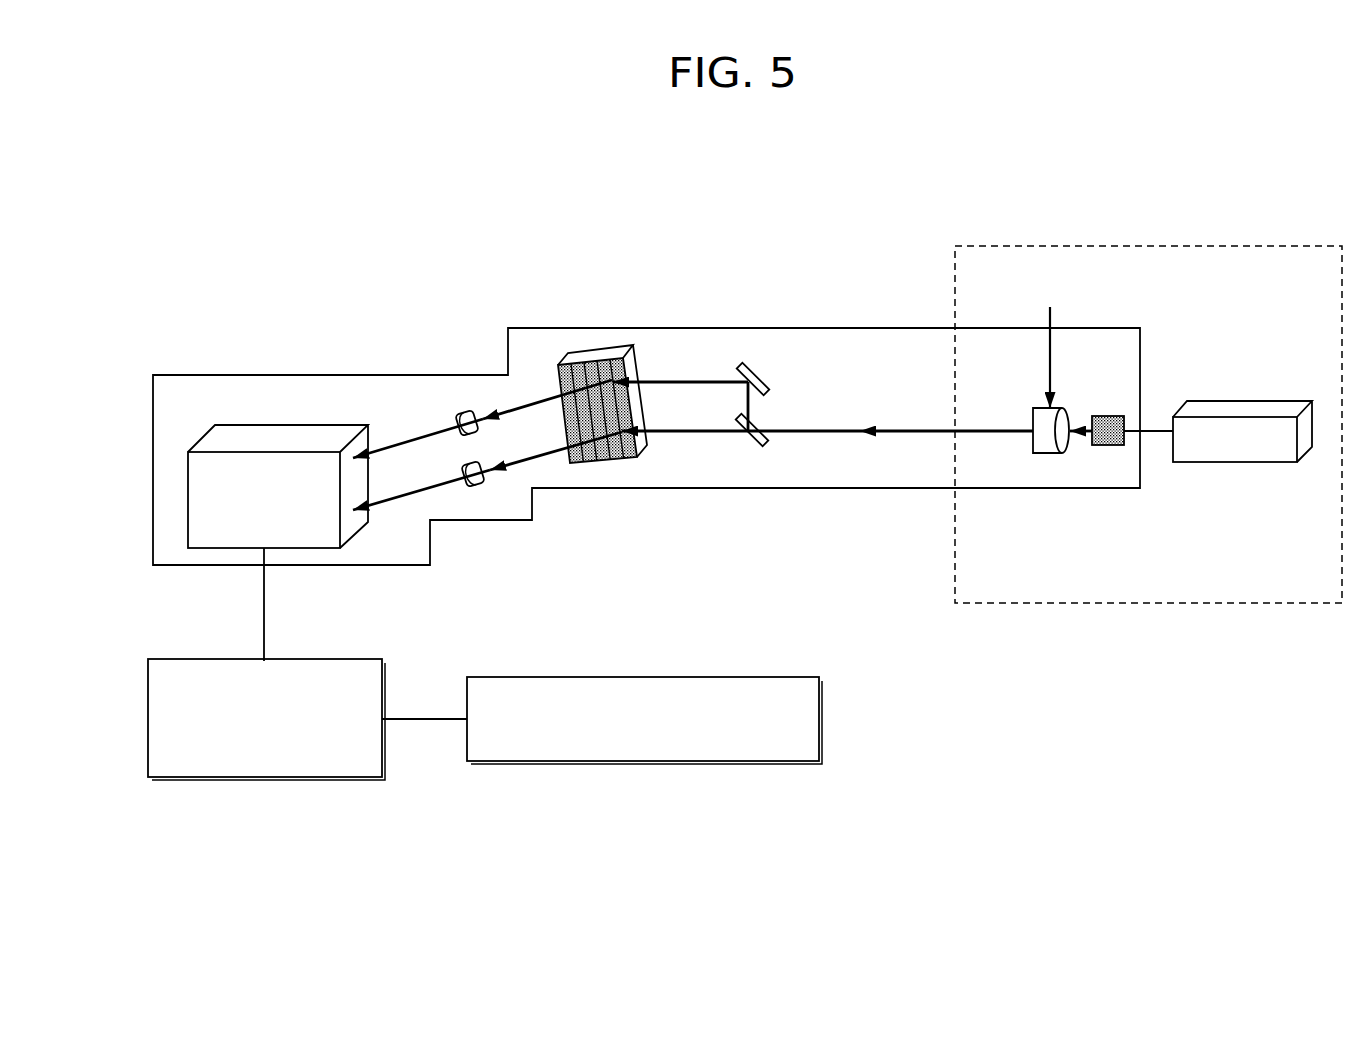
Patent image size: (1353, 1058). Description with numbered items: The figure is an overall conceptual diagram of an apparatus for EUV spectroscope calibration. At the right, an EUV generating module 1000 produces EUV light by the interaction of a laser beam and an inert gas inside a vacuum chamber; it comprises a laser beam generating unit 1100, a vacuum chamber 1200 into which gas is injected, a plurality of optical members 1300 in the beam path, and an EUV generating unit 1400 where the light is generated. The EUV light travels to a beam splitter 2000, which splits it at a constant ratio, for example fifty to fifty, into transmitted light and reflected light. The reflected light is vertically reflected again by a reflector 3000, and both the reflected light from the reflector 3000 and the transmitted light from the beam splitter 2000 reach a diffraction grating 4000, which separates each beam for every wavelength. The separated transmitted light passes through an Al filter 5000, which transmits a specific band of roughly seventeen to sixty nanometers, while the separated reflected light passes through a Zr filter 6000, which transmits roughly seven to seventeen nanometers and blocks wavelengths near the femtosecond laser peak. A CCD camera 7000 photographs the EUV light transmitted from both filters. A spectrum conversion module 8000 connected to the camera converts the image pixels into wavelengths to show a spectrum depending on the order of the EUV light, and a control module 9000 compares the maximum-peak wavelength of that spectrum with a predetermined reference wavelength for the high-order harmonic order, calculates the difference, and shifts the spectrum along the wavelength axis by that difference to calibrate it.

The EUV generating module 1000 is at (1156, 246).
The laser beam generating unit 1100 is at (1237, 462).
The vacuum chamber 1200 is at (1087, 488).
The optical members 1300 is at (1107, 445).
The EUV generating unit 1400 is at (1048, 453).
The beam splitter 2000 is at (755, 447).
The reflector 3000 is at (758, 360).
The diffraction grating 4000 is at (588, 352).
The Al filter 5000 is at (480, 487).
The Zr filter 6000 is at (467, 410).
The CCD camera 7000 is at (282, 437).
The spectrum conversion module 8000 is at (266, 779).
The control module 9000 is at (640, 762).